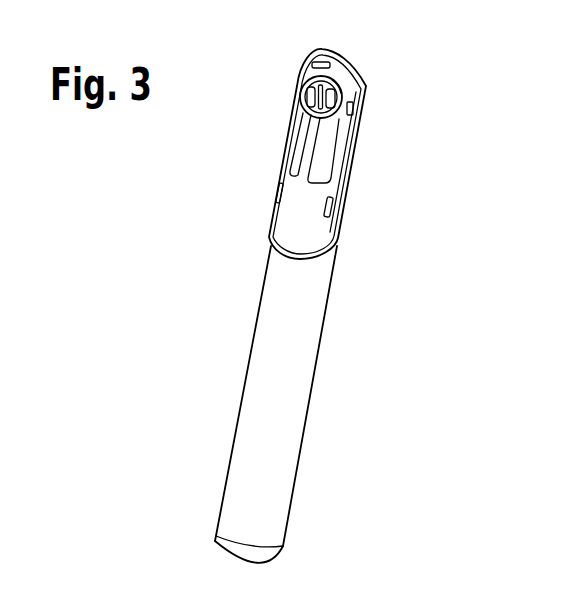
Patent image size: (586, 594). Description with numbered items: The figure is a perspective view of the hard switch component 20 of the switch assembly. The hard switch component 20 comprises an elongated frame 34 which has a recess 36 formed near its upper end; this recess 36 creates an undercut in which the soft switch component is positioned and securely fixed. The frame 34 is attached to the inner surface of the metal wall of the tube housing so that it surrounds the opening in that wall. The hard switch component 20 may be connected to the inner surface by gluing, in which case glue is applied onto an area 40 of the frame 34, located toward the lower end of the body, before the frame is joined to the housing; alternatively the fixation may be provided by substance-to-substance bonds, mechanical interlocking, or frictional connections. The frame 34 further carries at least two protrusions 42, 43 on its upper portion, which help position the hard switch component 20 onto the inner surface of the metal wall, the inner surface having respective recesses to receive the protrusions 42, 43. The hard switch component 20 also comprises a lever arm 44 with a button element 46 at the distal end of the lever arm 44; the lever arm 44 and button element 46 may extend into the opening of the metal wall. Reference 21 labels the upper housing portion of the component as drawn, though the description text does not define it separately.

The hard switch component 20 is at (328, 417).
The housing 21 is at (350, 95).
The frame 34 is at (270, 382).
The recess 36 is at (305, 58).
The area 40 is at (267, 490).
The protrusion 42 is at (353, 110).
The protrusion 43 is at (338, 212).
The lever arm 44 is at (307, 143).
The button element 46 is at (346, 84).